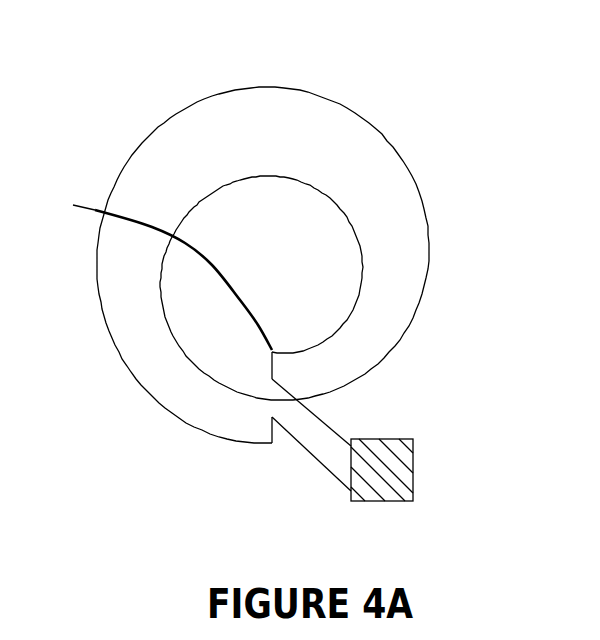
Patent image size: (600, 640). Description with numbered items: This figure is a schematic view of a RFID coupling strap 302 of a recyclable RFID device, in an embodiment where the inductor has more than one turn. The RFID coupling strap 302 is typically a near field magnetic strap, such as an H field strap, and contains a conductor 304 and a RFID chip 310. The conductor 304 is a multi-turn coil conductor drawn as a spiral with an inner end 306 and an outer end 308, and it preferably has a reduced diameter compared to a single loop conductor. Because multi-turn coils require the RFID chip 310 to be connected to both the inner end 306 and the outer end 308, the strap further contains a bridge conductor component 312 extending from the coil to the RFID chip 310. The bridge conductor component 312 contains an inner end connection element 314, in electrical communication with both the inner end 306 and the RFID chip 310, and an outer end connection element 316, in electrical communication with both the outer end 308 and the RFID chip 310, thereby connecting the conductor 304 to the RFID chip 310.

The RFID coupling strap 302 is at (403, 75).
The conductor 304 is at (225, 90).
The inner end 306 is at (154, 272).
The outer end 308 is at (272, 443).
The RFID chip 310 is at (416, 474).
The bridge conductor component 312 is at (385, 456).
The inner end connection element 314 is at (325, 421).
The outer end connection element 316 is at (311, 458).